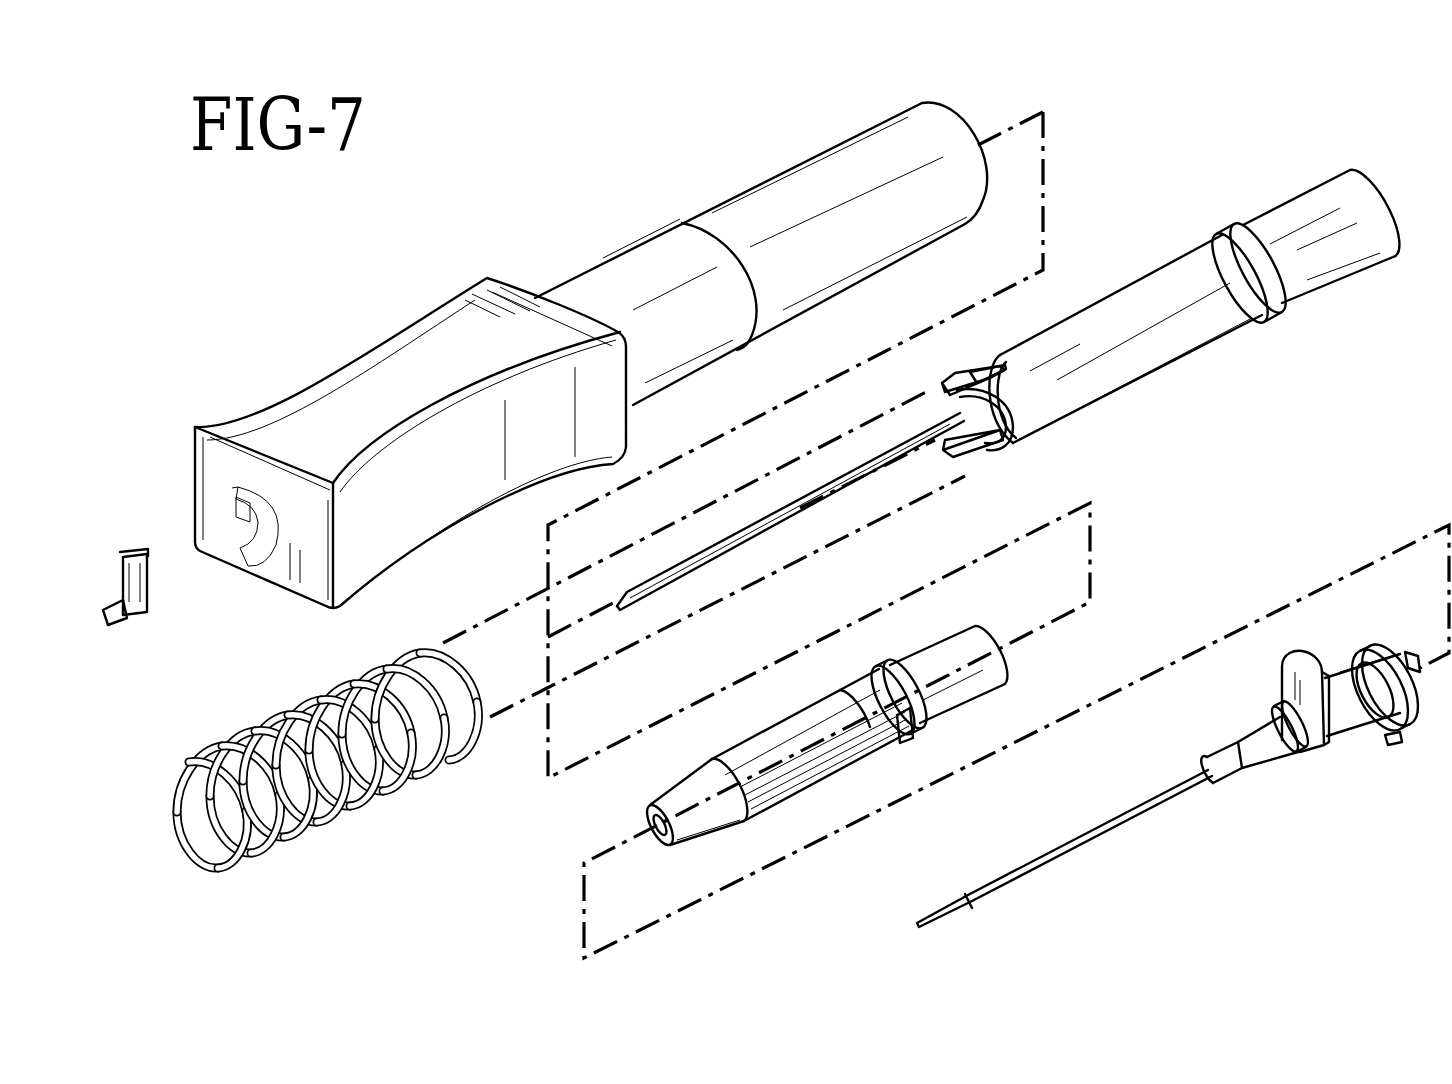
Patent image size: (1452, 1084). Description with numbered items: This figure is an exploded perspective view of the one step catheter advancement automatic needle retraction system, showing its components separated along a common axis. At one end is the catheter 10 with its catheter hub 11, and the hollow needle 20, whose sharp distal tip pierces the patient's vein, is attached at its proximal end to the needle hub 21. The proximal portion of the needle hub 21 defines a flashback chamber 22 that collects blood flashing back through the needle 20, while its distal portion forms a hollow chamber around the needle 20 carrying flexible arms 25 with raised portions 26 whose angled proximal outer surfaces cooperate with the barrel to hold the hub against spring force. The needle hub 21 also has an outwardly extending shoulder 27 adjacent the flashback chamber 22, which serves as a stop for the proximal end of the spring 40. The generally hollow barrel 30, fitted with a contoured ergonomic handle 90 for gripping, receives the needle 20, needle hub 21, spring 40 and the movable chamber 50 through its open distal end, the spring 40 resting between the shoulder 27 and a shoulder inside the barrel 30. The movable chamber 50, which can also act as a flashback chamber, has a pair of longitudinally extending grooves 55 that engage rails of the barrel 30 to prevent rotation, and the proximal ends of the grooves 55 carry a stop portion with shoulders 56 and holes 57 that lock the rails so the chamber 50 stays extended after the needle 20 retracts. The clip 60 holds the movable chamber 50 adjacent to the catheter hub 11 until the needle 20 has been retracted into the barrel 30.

The catheter 10 is at (1168, 805).
The catheter hub 11 is at (1352, 738).
The hollow needle 20 is at (830, 500).
The needle hub 21 is at (1170, 365).
The flashback chamber 22 is at (1357, 270).
The flexible arms 25 is at (977, 367).
The raised portions 26 is at (942, 379).
The outwardly extending shoulder 27 is at (1277, 318).
The barrel 30 is at (591, 355).
The spring 40 is at (327, 820).
The movable chamber 50 is at (707, 836).
The longitudinally extending grooves 55 is at (813, 777).
The shoulders 56 is at (892, 663).
The holes 57 is at (907, 742).
The clip 60 is at (150, 600).
The contoured ergonomic handle 90 is at (460, 480).